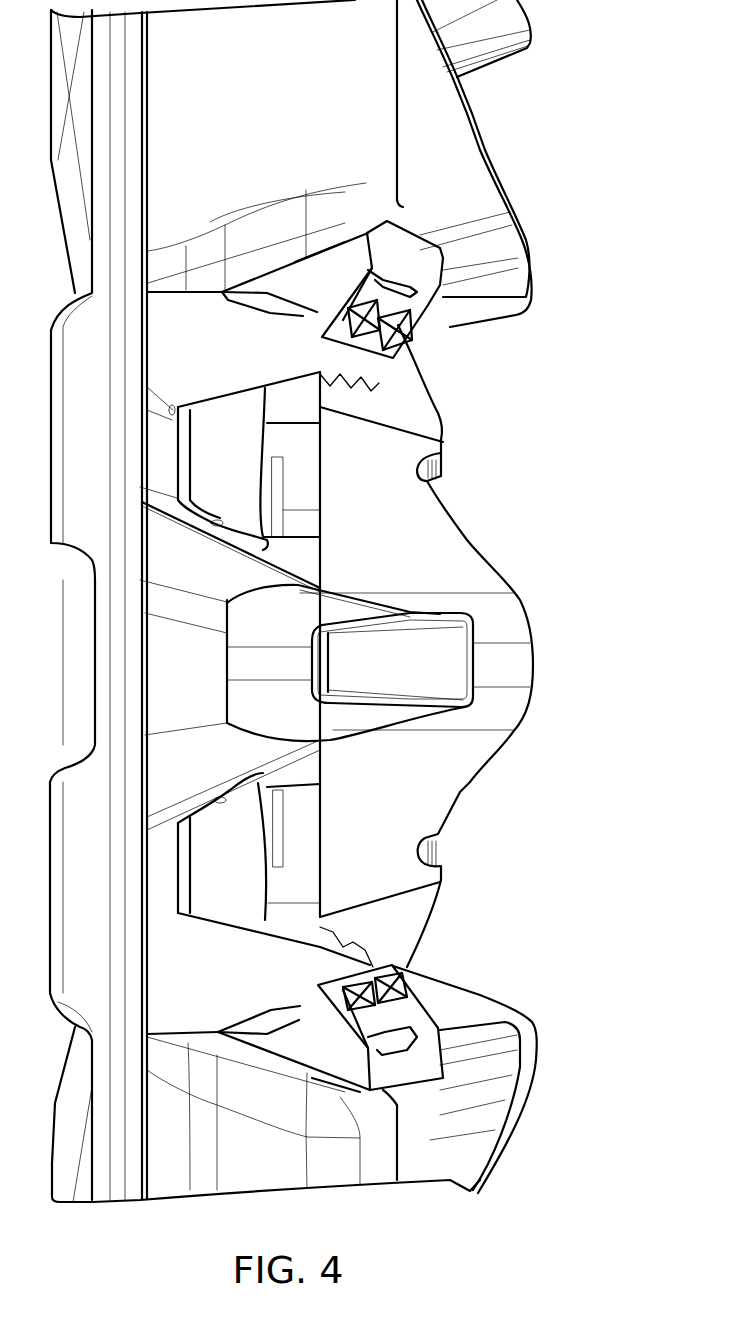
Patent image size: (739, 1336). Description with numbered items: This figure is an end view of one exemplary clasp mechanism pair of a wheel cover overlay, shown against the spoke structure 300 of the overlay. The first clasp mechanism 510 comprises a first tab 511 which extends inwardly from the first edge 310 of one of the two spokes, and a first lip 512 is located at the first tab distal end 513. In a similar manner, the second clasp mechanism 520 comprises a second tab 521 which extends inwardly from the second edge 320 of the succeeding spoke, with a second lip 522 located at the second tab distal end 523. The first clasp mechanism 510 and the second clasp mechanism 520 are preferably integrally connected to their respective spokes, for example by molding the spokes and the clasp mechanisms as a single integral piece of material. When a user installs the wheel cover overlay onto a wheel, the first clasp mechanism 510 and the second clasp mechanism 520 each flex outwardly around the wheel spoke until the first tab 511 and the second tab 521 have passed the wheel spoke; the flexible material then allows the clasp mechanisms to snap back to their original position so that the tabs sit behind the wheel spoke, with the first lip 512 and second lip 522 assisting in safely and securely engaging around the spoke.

The housing 300 is at (520, 302).
The first edge 310 is at (453, 310).
The second edge 320 is at (310, 970).
The first clasp mechanism 510 is at (403, 302).
The first tab 511 is at (319, 276).
The first lip 512 is at (324, 320).
The first tab distal end 513 is at (307, 307).
The second clasp mechanism 520 is at (402, 1015).
The second tab 521 is at (305, 1045).
The second lip 522 is at (310, 993).
The second tab distal end 523 is at (300, 1017).